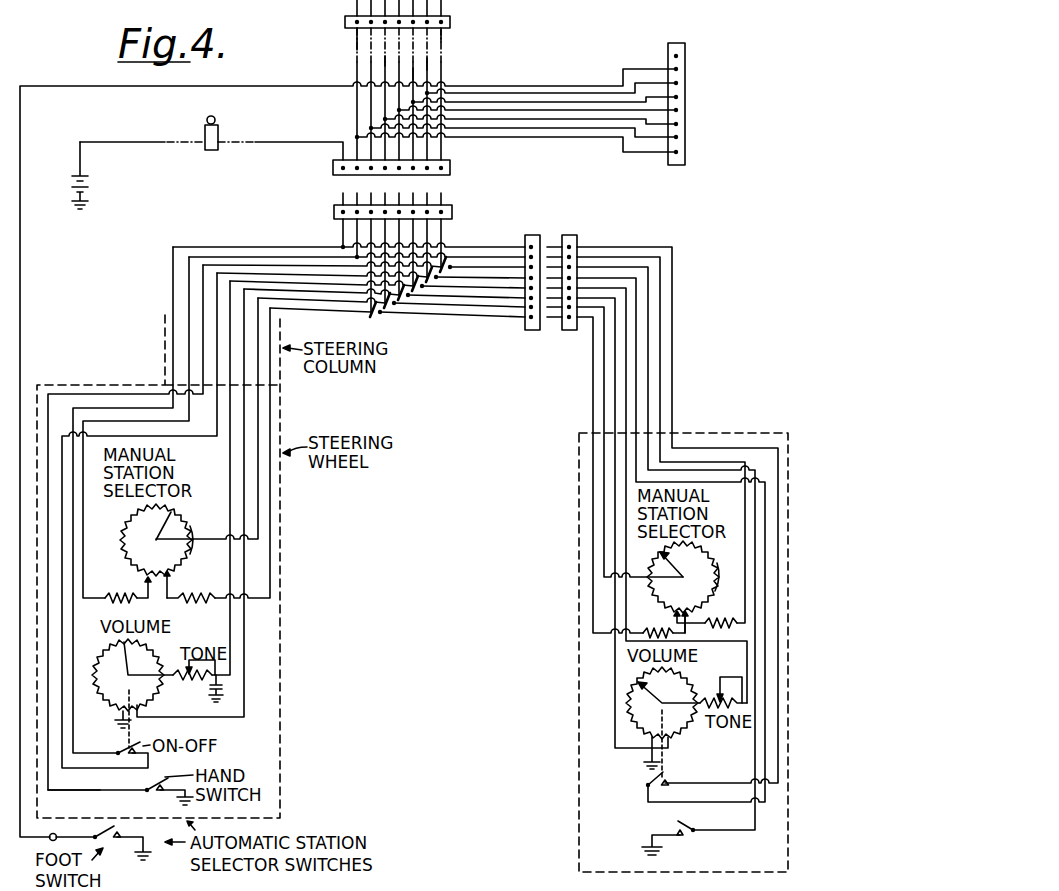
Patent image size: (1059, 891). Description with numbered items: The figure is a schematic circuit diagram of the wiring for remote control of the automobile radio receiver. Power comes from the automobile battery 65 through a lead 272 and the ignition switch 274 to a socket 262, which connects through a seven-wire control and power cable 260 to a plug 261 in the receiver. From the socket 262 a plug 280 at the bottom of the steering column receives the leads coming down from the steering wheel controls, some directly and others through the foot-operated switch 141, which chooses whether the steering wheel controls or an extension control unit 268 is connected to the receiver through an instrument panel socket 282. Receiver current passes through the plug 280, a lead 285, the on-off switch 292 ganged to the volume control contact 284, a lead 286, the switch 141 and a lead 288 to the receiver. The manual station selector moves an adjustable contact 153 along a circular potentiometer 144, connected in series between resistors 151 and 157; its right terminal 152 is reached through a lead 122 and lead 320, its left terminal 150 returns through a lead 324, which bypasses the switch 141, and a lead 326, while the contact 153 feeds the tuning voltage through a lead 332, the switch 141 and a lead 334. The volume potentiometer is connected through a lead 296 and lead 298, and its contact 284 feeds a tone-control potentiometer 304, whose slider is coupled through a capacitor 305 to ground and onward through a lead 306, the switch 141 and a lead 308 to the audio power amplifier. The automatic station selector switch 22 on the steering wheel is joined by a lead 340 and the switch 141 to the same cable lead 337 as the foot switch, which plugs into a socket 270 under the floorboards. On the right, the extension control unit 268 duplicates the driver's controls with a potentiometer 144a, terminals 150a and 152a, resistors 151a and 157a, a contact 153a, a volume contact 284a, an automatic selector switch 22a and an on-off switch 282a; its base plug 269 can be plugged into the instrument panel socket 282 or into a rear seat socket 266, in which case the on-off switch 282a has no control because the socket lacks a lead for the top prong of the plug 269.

The automatic station selector push-button switch 22 is at (167, 797).
The automatic station selector switch of extension unit 22a is at (696, 835).
The automobile battery 65 is at (93, 188).
The lead 122 is at (296, 312).
The switch 141 is at (378, 318).
The circular potentiometer 144 is at (190, 567).
The circular potentiometer of extension unit 144a is at (715, 563).
The left terminal 150 is at (136, 586).
The left terminal of extension unit potentiometer 150a is at (677, 606).
The resistor 151 is at (116, 597).
The resistor of extension unit 151a is at (728, 676).
The right terminal 152 is at (168, 577).
The right terminal of extension unit potentiometer 152a is at (688, 618).
The adjustable contact 153 is at (156, 540).
The adjustable contact of extension unit 153a is at (684, 577).
The resistor 157 is at (186, 601).
The resistor of extension unit 157a is at (667, 626).
The seven-wire control and power cable 260 is at (463, 43).
The plug 261 is at (450, 21).
The socket 262 is at (450, 167).
The socket 266 is at (677, 43).
The extension control unit 268 is at (580, 668).
The base plug 269 is at (575, 234).
The socket 270 is at (58, 826).
The lead 272 is at (105, 142).
The ignition switch 274 is at (198, 152).
The plug 280 is at (452, 216).
The instrument panel socket 282 is at (530, 234).
The on-off switch of extension unit 282a is at (667, 779).
The volume control potentiometer contact 284 is at (132, 683).
The volume control contact of extension unit 284a is at (663, 723).
The lead 285 is at (173, 246).
The lead 286 is at (219, 270).
The lead 288 is at (427, 64).
The on-off switch 292 is at (117, 750).
The lead 296 is at (298, 289).
The lead 298 is at (365, 94).
The tone-control potentiometer 304 is at (194, 682).
The capacitor 305 is at (224, 690).
The lead 306 is at (245, 270).
The lead 308 is at (412, 74).
The lead 320 is at (357, 34).
The lead 324 is at (189, 256).
The lead 326 is at (357, 40).
The lead 332 is at (259, 516).
The lead 334 is at (385, 61).
The lead 337 is at (441, 36).
The lead 340 is at (108, 790).